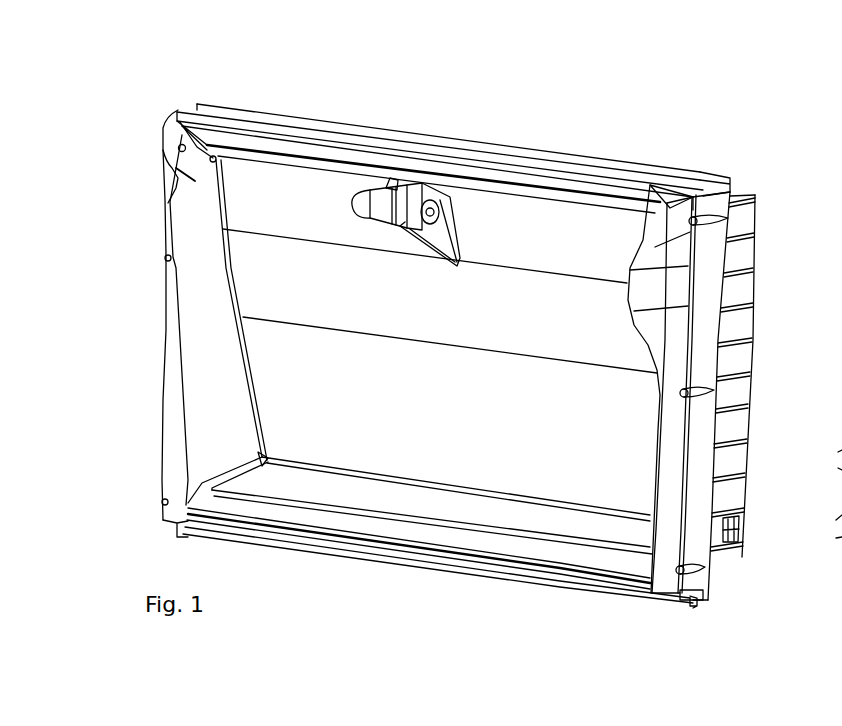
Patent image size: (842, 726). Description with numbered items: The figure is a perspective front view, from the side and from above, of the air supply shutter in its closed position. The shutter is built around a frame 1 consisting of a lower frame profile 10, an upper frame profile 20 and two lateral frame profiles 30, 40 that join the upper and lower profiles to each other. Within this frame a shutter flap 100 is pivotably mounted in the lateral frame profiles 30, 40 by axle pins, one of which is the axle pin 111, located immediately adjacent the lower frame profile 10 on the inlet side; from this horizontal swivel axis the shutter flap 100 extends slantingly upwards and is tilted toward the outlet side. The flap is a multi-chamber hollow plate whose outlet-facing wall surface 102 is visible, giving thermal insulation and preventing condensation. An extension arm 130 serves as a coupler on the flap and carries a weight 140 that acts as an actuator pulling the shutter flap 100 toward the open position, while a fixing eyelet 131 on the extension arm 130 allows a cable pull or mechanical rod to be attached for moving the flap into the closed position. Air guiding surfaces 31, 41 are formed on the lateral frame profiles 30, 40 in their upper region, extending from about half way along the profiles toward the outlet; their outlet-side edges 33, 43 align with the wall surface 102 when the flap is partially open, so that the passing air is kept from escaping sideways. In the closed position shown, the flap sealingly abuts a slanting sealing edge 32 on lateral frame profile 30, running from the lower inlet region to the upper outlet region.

The frame 1 is at (762, 358).
The lower frame profile 10 is at (465, 538).
The upper frame profile 20 is at (567, 156).
The lateral frame profile 30 is at (180, 386).
The air guiding surface 31 is at (166, 118).
The sealing edge 32 is at (234, 291).
The edge of air guiding surface 33 is at (171, 255).
The lateral frame profile 40 is at (700, 462).
The air guiding surface 41 is at (655, 250).
The edge of air guiding surface 43 is at (643, 294).
The shutter flap 100 is at (462, 399).
The wall surface 102 is at (429, 432).
The axle pin 111 is at (262, 456).
The extension arm 130 is at (458, 214).
The fixing eyelet 131 is at (387, 180).
The weight 140 is at (426, 200).